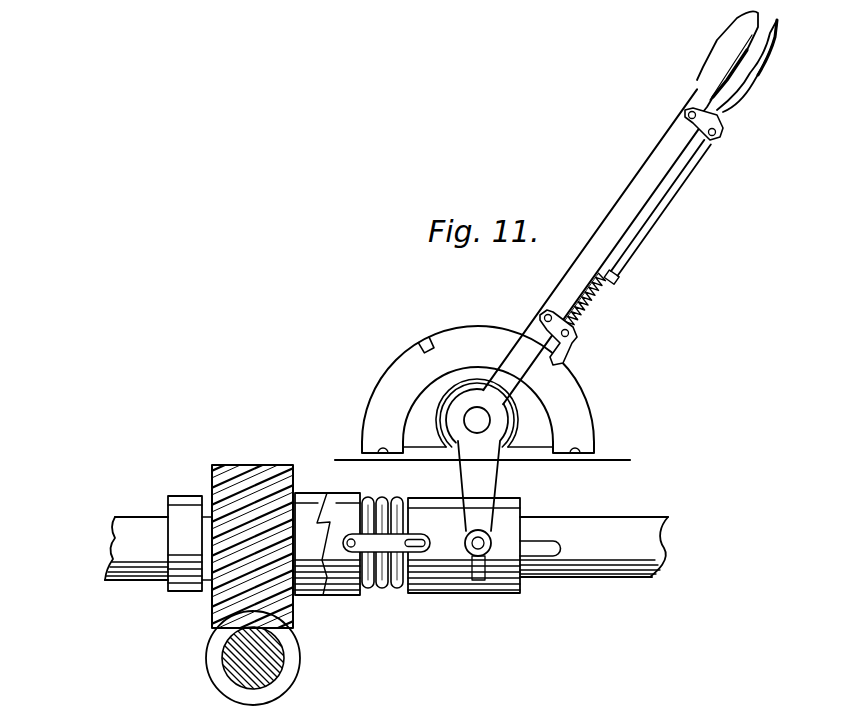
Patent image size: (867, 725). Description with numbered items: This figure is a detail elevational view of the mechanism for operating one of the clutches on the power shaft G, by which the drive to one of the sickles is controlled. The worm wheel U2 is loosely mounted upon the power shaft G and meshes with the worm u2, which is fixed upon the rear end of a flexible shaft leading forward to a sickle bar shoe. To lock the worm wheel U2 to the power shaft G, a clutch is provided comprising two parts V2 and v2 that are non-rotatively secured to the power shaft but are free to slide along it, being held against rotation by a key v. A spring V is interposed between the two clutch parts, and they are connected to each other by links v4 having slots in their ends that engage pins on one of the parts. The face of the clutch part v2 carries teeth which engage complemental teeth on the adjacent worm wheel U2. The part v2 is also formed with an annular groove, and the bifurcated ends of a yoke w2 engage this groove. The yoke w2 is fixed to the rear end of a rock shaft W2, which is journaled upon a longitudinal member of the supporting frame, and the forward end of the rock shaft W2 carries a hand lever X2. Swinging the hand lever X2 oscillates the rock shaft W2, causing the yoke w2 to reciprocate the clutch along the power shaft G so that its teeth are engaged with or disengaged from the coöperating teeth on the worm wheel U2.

The power shaft G is at (625, 567).
The worm wheel U2 is at (238, 463).
The worm u2 is at (285, 642).
The spring V is at (365, 493).
The clutch part V2 is at (320, 553).
The clutch part v2 is at (453, 575).
The links v4 is at (388, 543).
The key v is at (542, 550).
The rock shaft W2 is at (477, 420).
The yoke w2 is at (482, 478).
The hand lever X2 is at (618, 217).